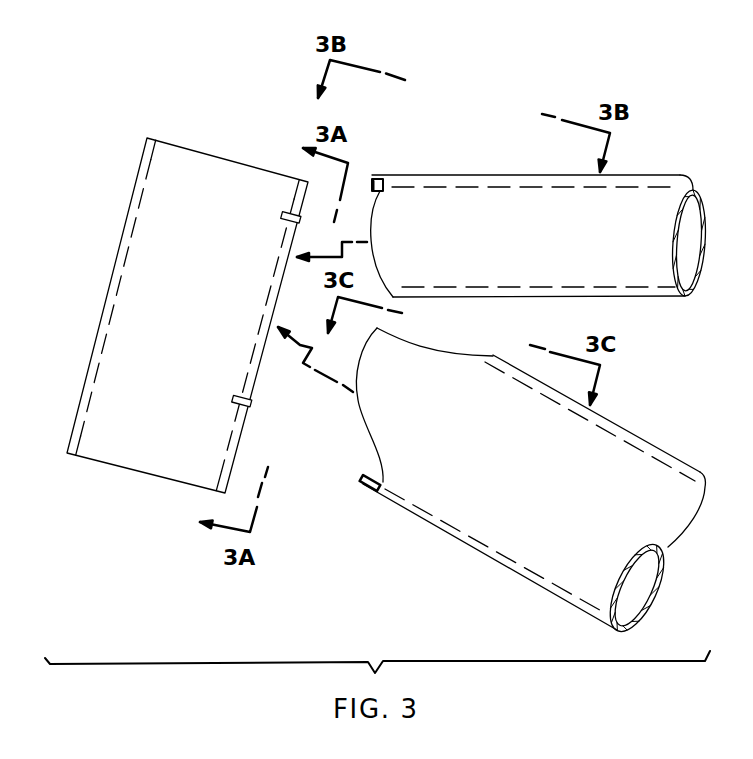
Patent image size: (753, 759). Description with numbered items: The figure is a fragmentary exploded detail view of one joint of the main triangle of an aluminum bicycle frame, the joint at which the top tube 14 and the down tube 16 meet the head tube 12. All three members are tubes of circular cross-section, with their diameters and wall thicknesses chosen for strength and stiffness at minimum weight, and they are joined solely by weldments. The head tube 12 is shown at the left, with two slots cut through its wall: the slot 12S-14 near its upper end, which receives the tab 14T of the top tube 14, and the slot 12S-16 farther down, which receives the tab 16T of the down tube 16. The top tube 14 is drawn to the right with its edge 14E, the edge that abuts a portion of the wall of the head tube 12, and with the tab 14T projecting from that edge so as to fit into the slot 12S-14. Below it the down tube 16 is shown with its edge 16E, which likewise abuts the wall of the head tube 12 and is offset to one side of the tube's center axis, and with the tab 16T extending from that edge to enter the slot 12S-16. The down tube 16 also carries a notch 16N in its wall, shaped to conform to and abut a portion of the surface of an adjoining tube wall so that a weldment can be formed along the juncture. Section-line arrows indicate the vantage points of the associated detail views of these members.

The head tube 12 is at (105, 300).
The slot of the head tube receiving the top tube tab 12S-14 is at (285, 212).
The slot of the head tube receiving the down tube tab 12S-16 is at (235, 402).
The top tube 14 is at (497, 176).
The edge of the top tube 14E is at (375, 215).
The tab of the top tube 14T is at (381, 182).
The down tube 16 is at (502, 567).
The edge of the down tube 16E is at (360, 423).
The notch of the down tube 16N is at (443, 353).
The tab of the down tube 16T is at (367, 492).